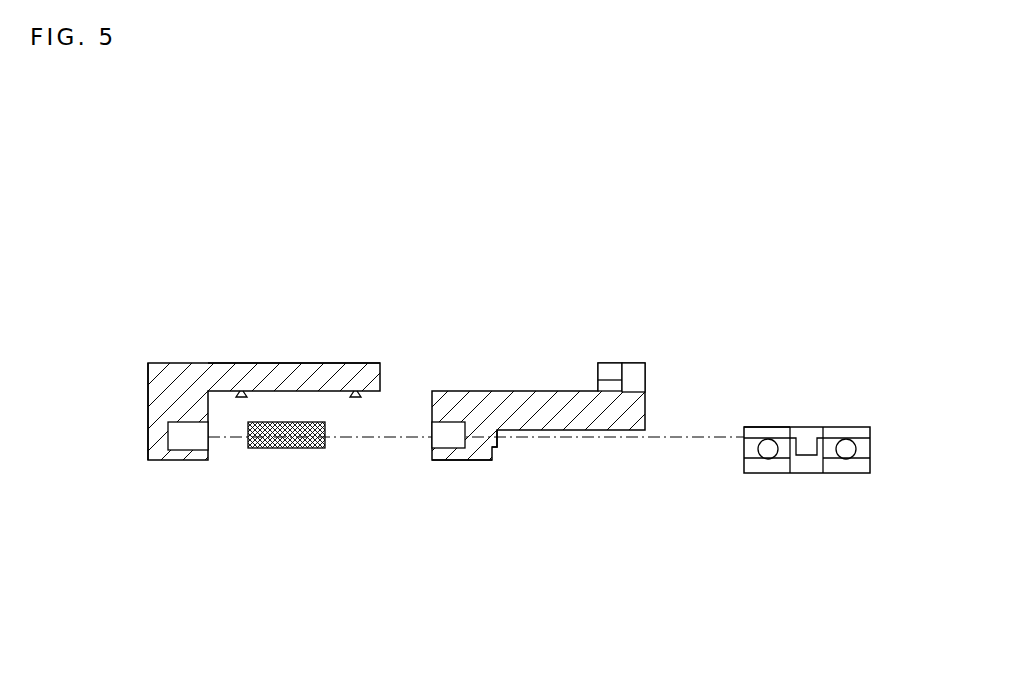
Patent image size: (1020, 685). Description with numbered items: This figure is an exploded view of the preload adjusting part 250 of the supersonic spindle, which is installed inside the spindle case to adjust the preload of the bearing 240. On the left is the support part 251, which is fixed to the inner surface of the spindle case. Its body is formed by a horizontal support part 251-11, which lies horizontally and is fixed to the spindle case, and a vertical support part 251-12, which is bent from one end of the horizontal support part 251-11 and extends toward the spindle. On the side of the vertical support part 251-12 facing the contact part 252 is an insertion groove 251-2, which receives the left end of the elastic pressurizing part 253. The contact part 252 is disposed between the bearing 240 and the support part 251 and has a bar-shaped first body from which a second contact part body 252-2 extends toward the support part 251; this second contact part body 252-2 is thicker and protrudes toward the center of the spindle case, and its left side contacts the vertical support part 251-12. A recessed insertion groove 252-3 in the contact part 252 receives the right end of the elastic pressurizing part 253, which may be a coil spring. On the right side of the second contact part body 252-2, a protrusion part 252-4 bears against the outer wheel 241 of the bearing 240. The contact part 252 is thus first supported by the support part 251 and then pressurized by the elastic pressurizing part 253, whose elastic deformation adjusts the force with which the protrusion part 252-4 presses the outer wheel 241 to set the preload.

The bearing 240 is at (822, 412).
The outer wheel 241 is at (745, 369).
The preload adjusting part 250 is at (160, 172).
The support part 251 is at (280, 334).
The horizontal support part 251-11 is at (352, 255).
The vertical support part 251-12 is at (148, 389).
The insertion groove 251-2 is at (208, 444).
The contact part 252 is at (550, 326).
The second contact part body 252-2 is at (502, 568).
The insertion groove 252-3 is at (415, 539).
The protrusion part 252-4 is at (578, 502).
The elastic pressurizing part 253 is at (308, 513).